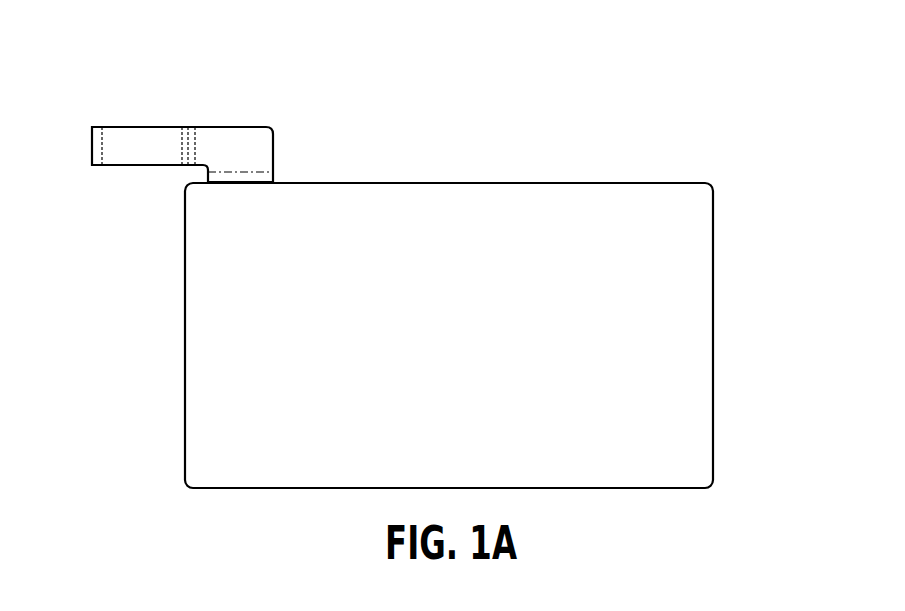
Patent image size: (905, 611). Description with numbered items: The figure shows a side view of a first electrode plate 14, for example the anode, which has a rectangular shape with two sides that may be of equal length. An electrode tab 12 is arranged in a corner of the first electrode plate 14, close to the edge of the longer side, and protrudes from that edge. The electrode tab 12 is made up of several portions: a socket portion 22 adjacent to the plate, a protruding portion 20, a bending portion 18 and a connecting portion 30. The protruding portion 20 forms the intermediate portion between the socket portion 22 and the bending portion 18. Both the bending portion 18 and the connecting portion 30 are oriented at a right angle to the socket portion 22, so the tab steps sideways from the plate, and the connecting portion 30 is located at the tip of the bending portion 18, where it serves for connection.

The electrode tab 12 is at (197, 118).
The first electrode plate 14 is at (714, 327).
The bending portion 18 is at (133, 138).
The protruding portion 20 is at (235, 138).
The socket portion 22 is at (262, 177).
The connecting portion 30 is at (97, 143).